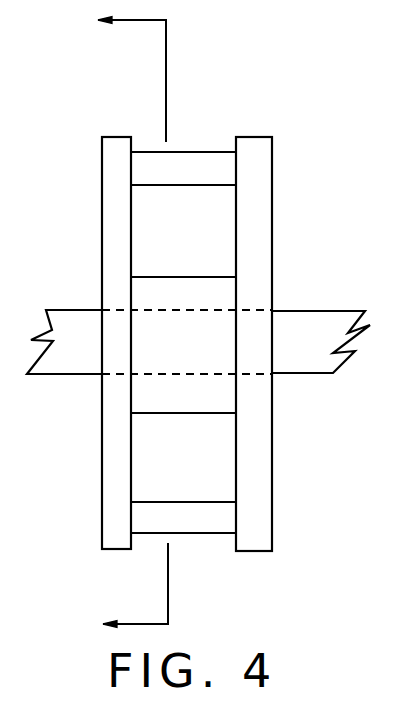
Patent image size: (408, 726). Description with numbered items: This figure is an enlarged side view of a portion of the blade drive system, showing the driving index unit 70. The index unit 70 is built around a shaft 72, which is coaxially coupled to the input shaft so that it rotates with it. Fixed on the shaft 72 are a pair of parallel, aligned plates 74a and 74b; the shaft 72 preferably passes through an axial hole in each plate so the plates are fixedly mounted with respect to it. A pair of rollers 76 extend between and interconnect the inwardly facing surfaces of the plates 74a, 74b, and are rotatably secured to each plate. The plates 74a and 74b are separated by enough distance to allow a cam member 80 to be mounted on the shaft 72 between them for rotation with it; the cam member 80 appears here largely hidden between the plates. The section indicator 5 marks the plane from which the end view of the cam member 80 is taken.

The section line 5- 5 is at (133, 322).
The driving index unit 70 is at (182, 367).
The shaft 72 is at (82, 354).
The plate 74a is at (252, 228).
The plate 74b is at (116, 226).
The rollers 76 is at (190, 374).
The cam member 80 is at (220, 295).